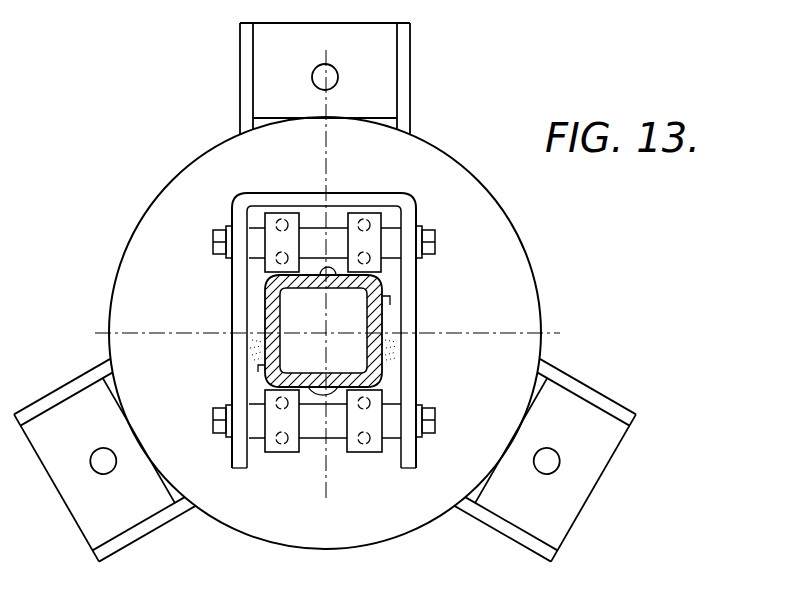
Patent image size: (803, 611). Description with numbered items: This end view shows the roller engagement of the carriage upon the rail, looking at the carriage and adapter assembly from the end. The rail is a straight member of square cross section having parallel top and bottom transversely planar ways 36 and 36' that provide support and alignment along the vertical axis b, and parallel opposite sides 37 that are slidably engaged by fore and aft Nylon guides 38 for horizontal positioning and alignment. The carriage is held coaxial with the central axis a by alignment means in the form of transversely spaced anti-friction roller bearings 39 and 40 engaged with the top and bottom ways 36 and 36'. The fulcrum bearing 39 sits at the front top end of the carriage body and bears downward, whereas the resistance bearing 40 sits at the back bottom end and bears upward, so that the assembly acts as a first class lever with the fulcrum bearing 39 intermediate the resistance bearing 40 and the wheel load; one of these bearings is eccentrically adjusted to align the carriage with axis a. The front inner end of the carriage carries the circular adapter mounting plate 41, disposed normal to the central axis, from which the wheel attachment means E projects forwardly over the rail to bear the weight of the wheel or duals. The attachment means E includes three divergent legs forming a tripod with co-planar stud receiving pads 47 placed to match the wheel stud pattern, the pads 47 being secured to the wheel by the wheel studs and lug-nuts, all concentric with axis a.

The top transversely planar way 36 is at (311, 294).
The bottom transversely planar way 36' is at (337, 366).
The opposite side of rail 37 is at (262, 368).
The Nylon guide 38 is at (258, 316).
The fulcrum bearing 39 is at (282, 213).
The resistance bearing 40 is at (356, 452).
The adapter mounting plate 41 is at (478, 207).
The stud receiving pad 47 is at (375, 60).
The wheel attachment means E is at (236, 46).
The central axis a is at (343, 334).
The vertical axis b is at (330, 168).